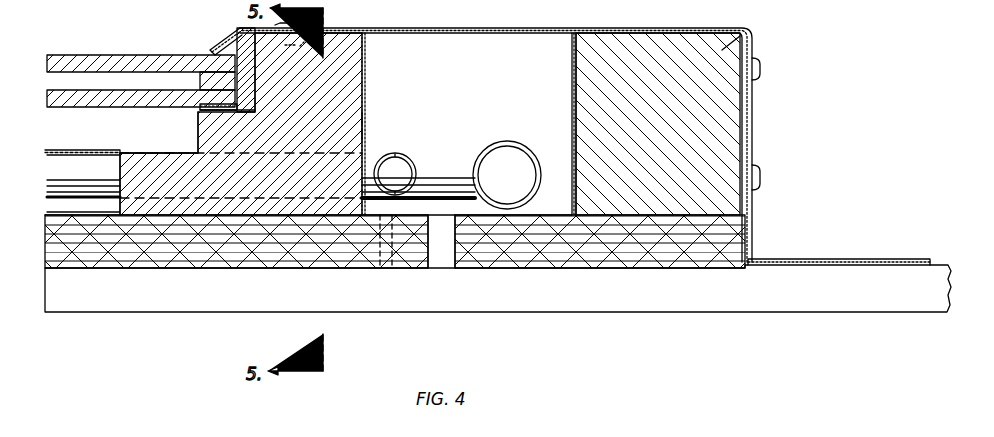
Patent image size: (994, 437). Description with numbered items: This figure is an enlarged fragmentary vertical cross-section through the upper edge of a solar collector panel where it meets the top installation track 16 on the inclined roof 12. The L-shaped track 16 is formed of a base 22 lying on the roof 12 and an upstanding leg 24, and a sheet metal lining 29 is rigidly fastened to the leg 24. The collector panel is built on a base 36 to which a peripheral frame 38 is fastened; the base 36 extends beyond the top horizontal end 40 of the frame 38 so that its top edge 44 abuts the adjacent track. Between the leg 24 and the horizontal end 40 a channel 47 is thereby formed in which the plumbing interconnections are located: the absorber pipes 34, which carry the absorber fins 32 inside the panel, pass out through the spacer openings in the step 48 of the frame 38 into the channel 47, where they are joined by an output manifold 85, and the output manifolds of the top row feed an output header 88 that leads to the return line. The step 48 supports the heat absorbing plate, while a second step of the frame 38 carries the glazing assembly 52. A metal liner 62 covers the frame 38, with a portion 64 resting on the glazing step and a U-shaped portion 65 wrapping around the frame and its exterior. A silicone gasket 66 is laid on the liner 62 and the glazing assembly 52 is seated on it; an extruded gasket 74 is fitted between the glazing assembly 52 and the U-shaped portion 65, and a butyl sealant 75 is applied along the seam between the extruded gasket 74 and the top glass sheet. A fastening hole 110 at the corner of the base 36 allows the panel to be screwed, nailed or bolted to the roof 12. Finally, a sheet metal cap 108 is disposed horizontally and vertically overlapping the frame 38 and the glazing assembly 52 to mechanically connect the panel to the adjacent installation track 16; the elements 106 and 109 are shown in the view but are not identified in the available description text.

The roof 12 is at (521, 308).
The top installation track 16 is at (668, 118).
The base 22 is at (624, 250).
The leg 24 is at (755, 36).
The sheet metal lining 29 is at (570, 58).
The absorber fins 32 is at (106, 152).
The absorber pipes 34 is at (72, 168).
The base 36 is at (196, 253).
The peripheral frame 38 is at (366, 118).
The top horizontal end 40 is at (366, 134).
The top edge 44 is at (432, 252).
The channel 47 is at (472, 60).
The step 48 is at (192, 152).
The glazing assembly 52 is at (118, 53).
The metal liner 62 is at (262, 115).
The portion 64 is at (240, 150).
The U-shaped portion 65 is at (366, 46).
The silicone gasket 66 is at (215, 155).
The extruded gasket 74 is at (252, 104).
The butyl sealant 75 is at (225, 44).
The output manifold 85 is at (398, 160).
The output header 88 is at (512, 150).
The sealing strip 106 is at (814, 256).
The sheet metal caps 108 is at (458, 30).
The fastener 109 is at (294, 50).
The fastening hole 110 is at (384, 275).